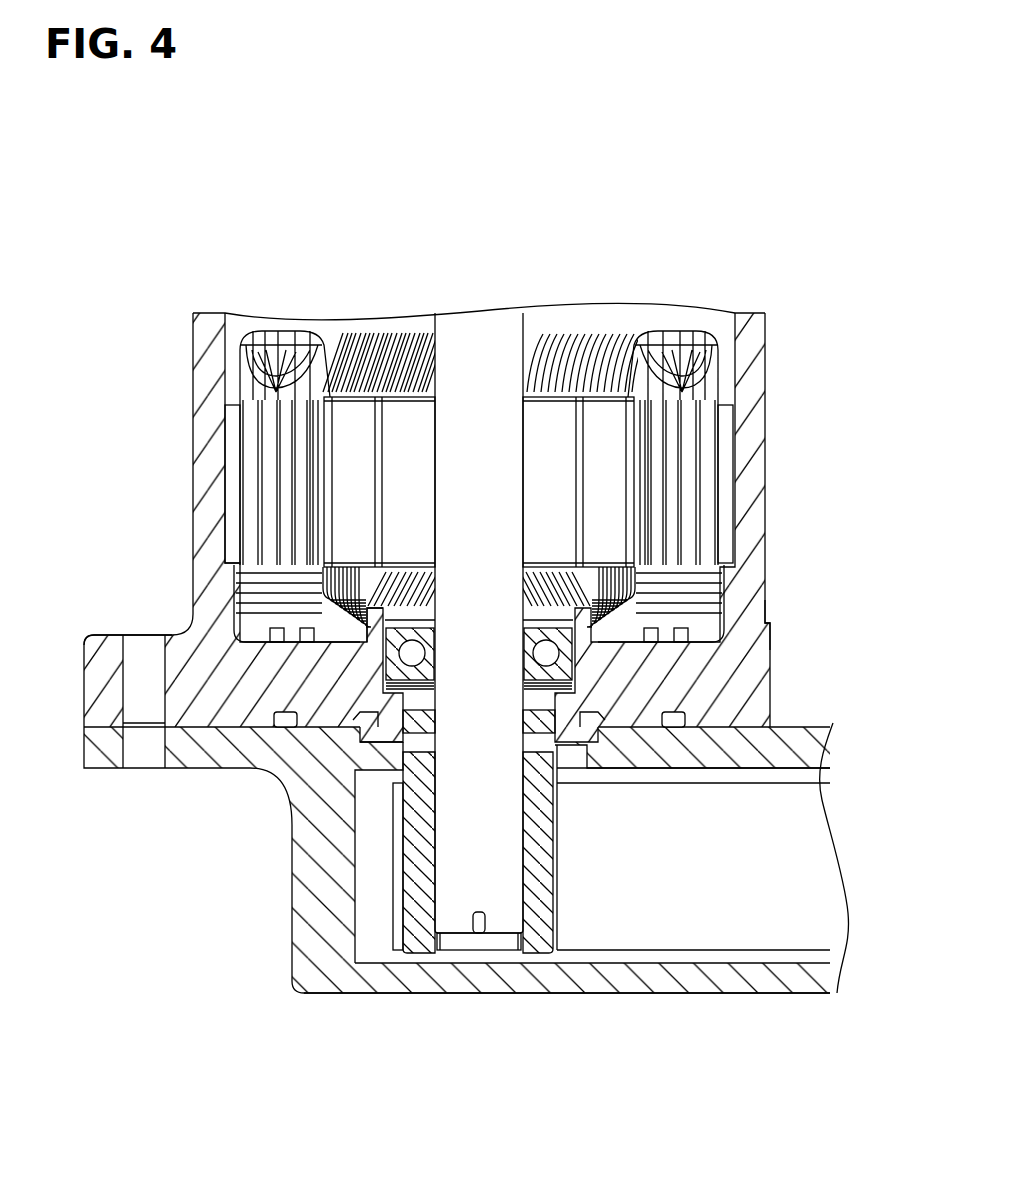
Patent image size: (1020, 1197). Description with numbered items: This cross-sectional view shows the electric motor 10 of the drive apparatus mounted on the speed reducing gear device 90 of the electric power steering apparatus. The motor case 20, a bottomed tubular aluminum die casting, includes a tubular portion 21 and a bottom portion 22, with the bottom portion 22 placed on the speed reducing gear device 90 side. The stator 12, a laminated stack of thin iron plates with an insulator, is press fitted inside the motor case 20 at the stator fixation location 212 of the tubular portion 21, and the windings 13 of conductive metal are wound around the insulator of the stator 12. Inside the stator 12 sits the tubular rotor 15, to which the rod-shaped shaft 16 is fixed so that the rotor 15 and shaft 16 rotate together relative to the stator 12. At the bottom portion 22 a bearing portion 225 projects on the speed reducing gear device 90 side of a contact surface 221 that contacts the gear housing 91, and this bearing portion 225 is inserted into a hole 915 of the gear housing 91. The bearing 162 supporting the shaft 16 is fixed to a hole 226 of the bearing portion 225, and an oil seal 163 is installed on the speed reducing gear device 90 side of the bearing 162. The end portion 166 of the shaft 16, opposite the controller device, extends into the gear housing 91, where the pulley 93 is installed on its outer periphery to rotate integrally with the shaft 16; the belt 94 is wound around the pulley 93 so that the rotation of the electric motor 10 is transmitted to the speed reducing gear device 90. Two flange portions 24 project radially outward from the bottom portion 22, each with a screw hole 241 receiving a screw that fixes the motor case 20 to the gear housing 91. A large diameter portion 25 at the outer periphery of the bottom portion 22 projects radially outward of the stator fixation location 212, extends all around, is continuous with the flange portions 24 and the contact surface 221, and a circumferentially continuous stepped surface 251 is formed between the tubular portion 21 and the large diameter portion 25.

The electric motor 10 is at (852, 663).
The stator 12 is at (230, 422).
The windings 13 is at (257, 340).
The rotor 15 is at (347, 463).
The shaft 16 is at (457, 502).
The motor case 20 is at (768, 405).
The tubular portion 21 is at (760, 472).
The stator fixation location 212 is at (760, 440).
The bottom portion 22 is at (205, 722).
The contact surface 221 is at (723, 742).
The bearing portion 225 is at (375, 744).
The hole 226 is at (357, 620).
The flange portions 24 is at (92, 657).
The screw hole 241 is at (125, 700).
The large diameter portion 25 is at (772, 648).
The stepped surface 251 is at (768, 625).
The bearing 162 is at (567, 663).
The oil seal 163 is at (557, 705).
The end portion 166 is at (455, 935).
The speed reducing gear device 90 is at (257, 968).
The gear housing 91 is at (315, 980).
The pulley 93 is at (543, 948).
The hole 915 is at (575, 757).
The belt 94 is at (688, 933).